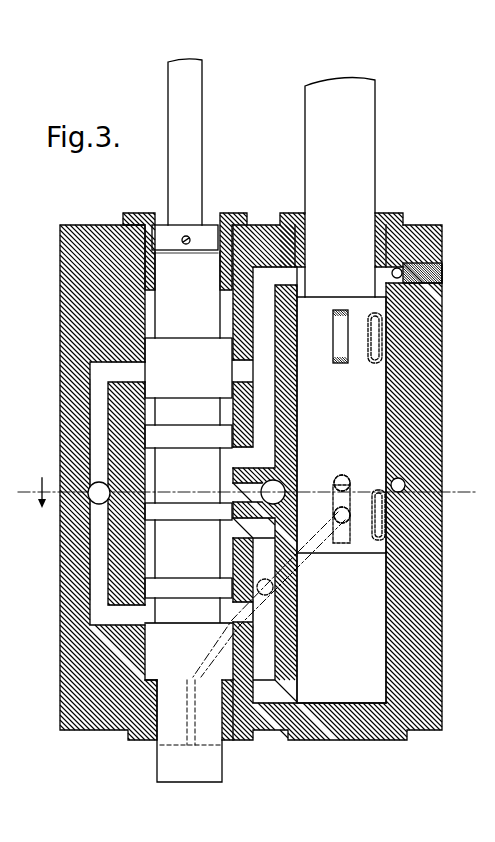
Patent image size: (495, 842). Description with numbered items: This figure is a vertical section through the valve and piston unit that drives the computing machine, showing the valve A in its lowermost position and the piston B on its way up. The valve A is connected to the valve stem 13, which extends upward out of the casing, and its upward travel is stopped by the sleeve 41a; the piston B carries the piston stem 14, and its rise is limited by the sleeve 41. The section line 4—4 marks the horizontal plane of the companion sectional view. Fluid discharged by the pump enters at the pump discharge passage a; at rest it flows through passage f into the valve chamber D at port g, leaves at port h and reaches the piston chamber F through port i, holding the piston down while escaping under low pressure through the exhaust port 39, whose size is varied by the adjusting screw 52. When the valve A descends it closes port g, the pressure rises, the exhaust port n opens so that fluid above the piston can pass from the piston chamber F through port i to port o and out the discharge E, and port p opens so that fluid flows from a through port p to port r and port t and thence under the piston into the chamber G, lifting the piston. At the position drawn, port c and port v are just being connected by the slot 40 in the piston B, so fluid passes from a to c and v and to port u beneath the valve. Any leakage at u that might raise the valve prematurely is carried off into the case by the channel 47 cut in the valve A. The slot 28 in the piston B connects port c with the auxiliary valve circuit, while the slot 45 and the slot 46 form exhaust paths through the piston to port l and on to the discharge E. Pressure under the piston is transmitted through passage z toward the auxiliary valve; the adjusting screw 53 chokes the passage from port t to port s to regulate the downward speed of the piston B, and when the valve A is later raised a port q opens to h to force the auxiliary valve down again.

The valve stem 13 is at (185, 142).
The piston stem 14 is at (340, 187).
The sleeve 41a is at (231, 216).
The sleeve 41 is at (384, 215).
The exhaust port 39 is at (404, 267).
The adjusting screw 52 is at (446, 273).
The slot 28 is at (333, 337).
The slot 45 is at (377, 358).
The slot 40 is at (342, 545).
The slot 46 is at (378, 541).
The adjusting screw 53 is at (273, 587).
The channel 47 is at (187, 746).
The section line 4 is at (245, 493).
The valve A is at (188, 517).
The piston B is at (341, 425).
The valve chamber D is at (143, 305).
The discharge E is at (273, 492).
The piston chamber F is at (307, 284).
The chamber G is at (341, 628).
The pump discharge passage a is at (99, 493).
The port c is at (347, 477).
The passage f is at (94, 490).
The port g is at (126, 372).
The port h is at (243, 370).
The port i is at (274, 275).
The port l is at (405, 484).
The exhaust port n is at (247, 493).
The port o is at (243, 456).
The port p is at (126, 614).
The port q is at (260, 614).
The port r is at (243, 612).
The port s is at (254, 527).
The port t is at (275, 693).
The port u is at (195, 672).
The port v is at (338, 512).
The passage z is at (260, 635).